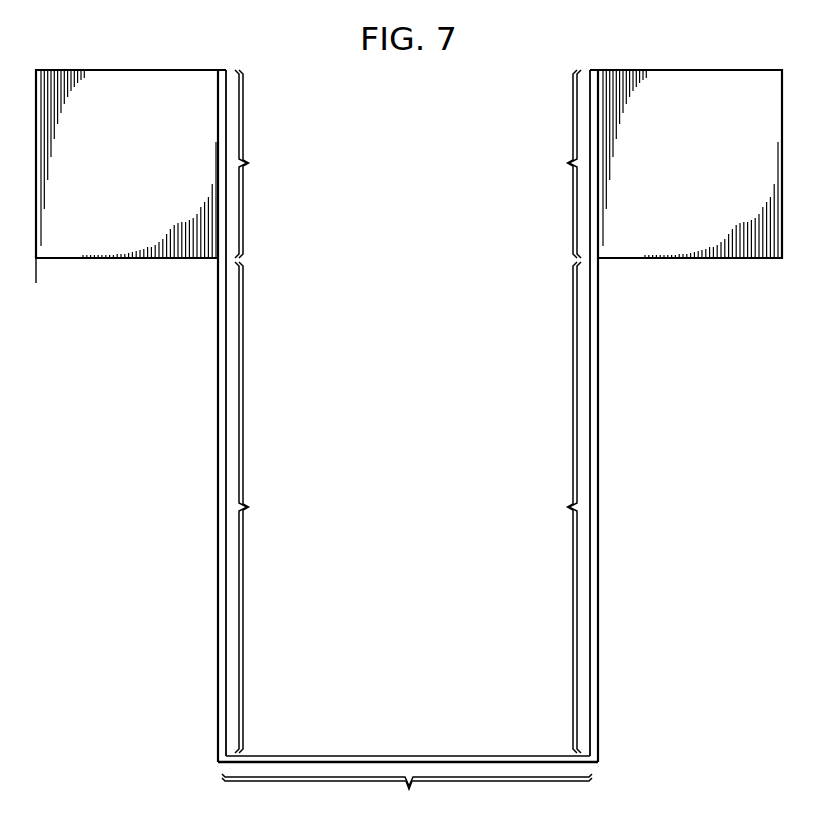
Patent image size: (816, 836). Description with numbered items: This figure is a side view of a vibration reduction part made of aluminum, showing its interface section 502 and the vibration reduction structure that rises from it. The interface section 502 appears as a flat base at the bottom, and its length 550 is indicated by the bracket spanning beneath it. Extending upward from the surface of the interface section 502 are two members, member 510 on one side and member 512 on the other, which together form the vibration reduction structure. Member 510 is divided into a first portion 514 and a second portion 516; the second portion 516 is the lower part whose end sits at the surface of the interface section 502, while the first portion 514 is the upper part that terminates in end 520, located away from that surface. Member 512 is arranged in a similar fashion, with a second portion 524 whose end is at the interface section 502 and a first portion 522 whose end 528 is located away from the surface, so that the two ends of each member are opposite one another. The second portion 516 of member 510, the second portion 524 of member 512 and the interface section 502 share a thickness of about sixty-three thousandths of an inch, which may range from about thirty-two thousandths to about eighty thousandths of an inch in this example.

The interface section 502 is at (484, 756).
The member 510 is at (218, 604).
The member 512 is at (598, 604).
The first portion 514 is at (261, 164).
The second portion 516 is at (261, 507).
The end 520 is at (116, 76).
The first portion 522 is at (554, 164).
The second portion 524 is at (554, 507).
The end 528 is at (701, 76).
The length 550 is at (407, 796).